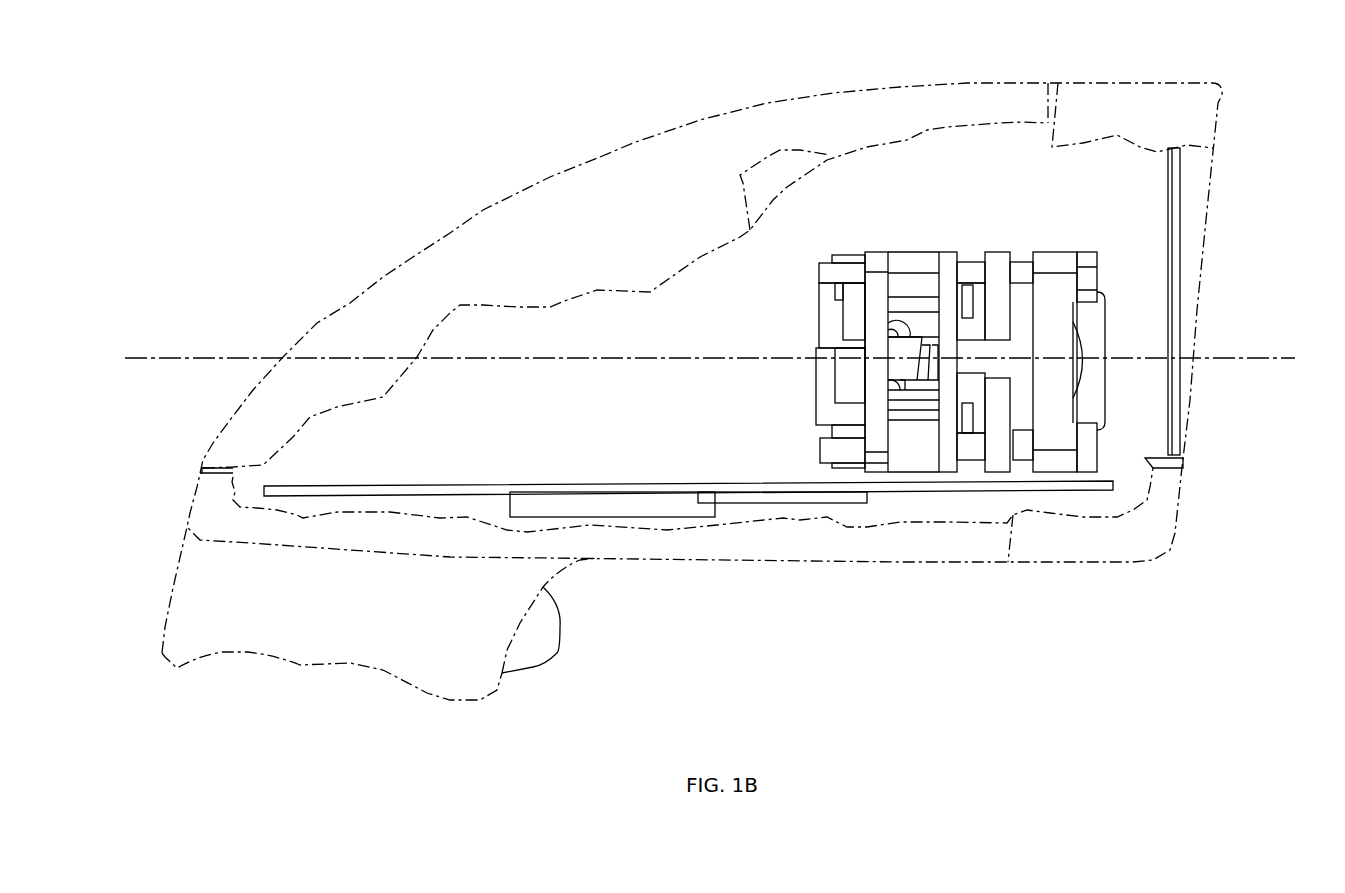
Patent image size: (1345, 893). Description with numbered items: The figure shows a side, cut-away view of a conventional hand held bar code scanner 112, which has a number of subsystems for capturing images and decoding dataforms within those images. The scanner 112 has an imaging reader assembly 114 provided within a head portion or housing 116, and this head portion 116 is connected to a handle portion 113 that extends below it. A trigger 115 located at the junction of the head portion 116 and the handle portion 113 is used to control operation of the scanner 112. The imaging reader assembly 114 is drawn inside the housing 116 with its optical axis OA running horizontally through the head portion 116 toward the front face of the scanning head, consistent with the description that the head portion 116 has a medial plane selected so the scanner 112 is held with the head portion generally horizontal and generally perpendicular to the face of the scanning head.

The hand held bar code scanner 112 is at (524, 96).
The handle portion 113 is at (363, 624).
The imaging reader assembly 114 is at (970, 238).
The trigger 115 is at (561, 628).
The head portion or housing 116 is at (411, 247).
The optical axis OA is at (1252, 355).